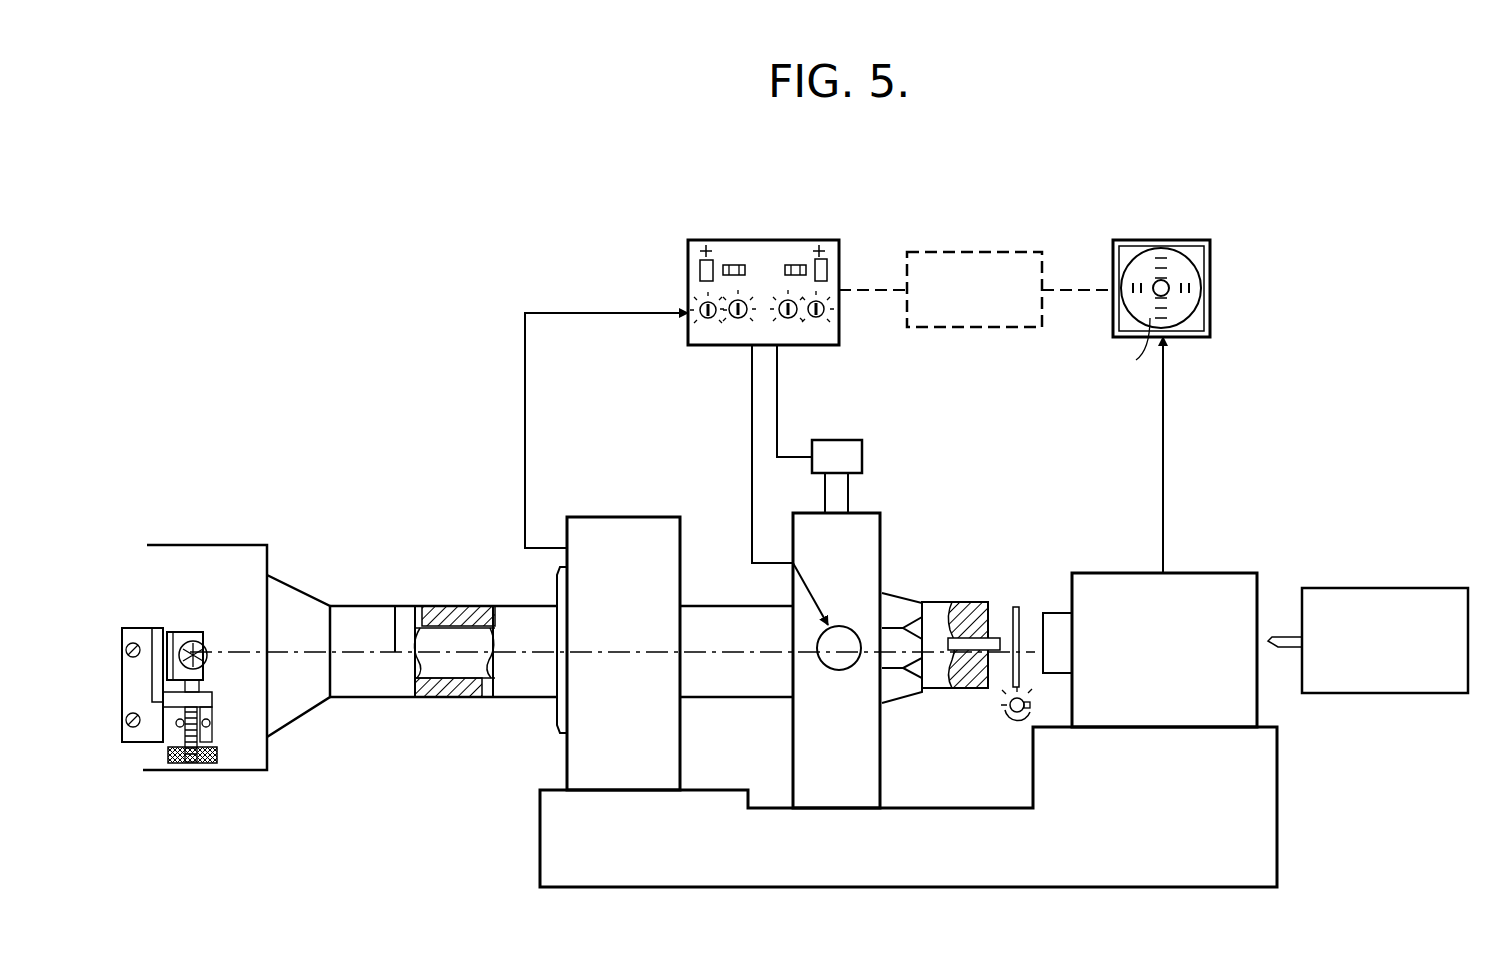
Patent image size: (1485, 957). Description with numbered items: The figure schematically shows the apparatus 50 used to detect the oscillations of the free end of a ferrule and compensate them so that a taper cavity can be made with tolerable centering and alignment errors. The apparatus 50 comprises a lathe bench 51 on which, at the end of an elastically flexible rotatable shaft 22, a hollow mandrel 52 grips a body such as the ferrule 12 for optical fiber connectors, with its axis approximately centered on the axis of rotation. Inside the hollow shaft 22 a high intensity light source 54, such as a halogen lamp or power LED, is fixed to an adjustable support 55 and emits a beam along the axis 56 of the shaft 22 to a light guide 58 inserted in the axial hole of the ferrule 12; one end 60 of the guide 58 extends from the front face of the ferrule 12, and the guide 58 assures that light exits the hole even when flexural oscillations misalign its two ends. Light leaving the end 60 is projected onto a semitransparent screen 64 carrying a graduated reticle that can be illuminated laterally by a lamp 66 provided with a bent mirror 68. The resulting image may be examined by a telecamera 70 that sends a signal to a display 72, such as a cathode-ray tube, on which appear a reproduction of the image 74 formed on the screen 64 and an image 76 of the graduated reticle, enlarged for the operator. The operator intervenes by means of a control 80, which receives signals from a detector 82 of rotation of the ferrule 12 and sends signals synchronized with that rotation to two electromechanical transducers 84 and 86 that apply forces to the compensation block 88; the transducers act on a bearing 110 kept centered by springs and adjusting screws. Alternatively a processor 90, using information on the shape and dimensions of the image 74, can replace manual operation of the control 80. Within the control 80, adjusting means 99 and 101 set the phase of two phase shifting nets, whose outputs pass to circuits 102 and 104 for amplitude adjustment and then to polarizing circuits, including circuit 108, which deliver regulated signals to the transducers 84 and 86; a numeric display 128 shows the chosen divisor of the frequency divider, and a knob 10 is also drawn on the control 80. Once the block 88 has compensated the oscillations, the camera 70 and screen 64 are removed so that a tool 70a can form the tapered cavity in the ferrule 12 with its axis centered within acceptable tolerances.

The first adjustment knob 10 is at (702, 318).
The ferrule 12 is at (968, 602).
The elastically flexible rotatable shaft 22 is at (412, 555).
The apparatus 50 is at (1172, 496).
The lathe bench 51 is at (888, 869).
The mandrel 52 is at (895, 597).
The high intensity light source 54 is at (206, 649).
The adjustable support 55 is at (148, 624).
The axis of the shaft 56 is at (395, 606).
The light guide 58 is at (962, 690).
The end of the light guide 60 is at (1000, 638).
The semitransparent screen 64 is at (1019, 612).
The lamp 66 is at (1030, 705).
The bent mirror 68 is at (1007, 718).
The telecamera 70 is at (1178, 675).
The tool 70a is at (1278, 635).
The display 72 is at (1178, 305).
The image 74 is at (1165, 282).
The image of the graduated reticle 76 is at (1150, 262).
The control 80 is at (720, 238).
The detector of rotation 82 is at (645, 565).
The electromechanical transducer 84 is at (839, 670).
The electromechanical transducer 86 is at (862, 455).
The compensation block 88 is at (882, 528).
The processor 90 is at (988, 318).
The adjusting means 99 is at (700, 268).
The adjusting means 101 is at (827, 265).
The amplitude adjusting circuit 102 is at (735, 320).
The amplitude adjusting circuit 104 is at (790, 320).
The polarizing circuit 108 is at (822, 318).
The bearing 110 is at (793, 736).
The numeric display 128 is at (795, 264).